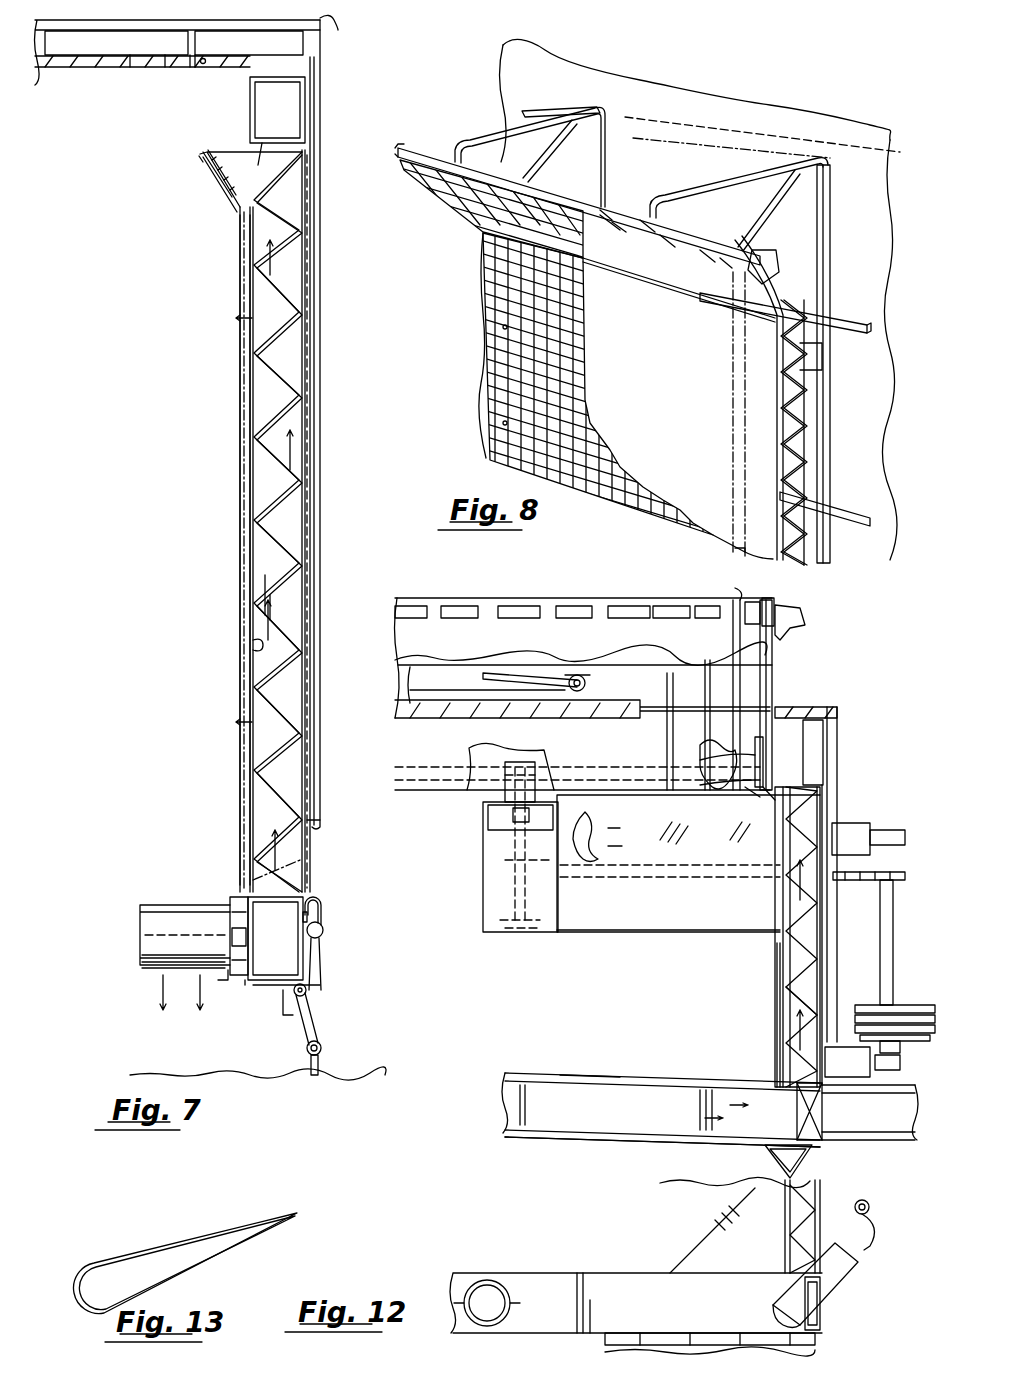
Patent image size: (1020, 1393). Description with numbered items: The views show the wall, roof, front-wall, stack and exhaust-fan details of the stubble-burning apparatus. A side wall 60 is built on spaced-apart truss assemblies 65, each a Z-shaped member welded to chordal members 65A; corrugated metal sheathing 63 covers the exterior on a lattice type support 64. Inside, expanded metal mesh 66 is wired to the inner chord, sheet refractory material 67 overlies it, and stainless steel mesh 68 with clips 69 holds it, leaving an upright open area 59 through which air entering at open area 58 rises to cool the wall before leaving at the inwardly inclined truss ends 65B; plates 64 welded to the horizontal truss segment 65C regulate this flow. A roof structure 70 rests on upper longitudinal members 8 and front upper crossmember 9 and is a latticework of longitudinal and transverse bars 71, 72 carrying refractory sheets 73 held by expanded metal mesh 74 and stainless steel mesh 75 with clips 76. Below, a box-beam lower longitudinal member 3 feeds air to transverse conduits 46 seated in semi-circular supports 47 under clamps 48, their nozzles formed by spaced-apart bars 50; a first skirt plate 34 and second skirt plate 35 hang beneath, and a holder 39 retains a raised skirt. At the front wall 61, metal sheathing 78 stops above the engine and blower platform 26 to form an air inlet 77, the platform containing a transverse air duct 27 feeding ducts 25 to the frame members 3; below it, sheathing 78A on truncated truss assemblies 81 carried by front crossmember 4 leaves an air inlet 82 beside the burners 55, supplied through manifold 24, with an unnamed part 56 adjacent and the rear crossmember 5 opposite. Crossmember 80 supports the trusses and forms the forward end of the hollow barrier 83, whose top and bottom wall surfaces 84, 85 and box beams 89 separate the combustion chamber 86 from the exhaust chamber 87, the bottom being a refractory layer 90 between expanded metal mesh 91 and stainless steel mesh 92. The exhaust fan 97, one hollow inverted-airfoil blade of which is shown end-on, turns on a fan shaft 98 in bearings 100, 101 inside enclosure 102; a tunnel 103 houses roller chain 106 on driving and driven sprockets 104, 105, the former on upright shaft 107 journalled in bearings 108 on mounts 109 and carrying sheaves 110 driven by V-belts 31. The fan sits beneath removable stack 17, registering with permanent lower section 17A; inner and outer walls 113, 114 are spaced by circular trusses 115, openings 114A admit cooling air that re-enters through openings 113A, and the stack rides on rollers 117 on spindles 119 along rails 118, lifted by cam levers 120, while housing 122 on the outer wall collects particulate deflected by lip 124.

In FIG. 7, the roof structure 70 is at (330, 32).
In FIG. 12, the roof structure 70 is at (645, 708).
In FIG. 7, the longitudinal bars 71 is at (60, 46).
In FIG. 7, the transverse bars 72 is at (115, 50).
In FIG. 7, the refractory sheets 73 is at (78, 68).
In FIG. 7, the expanded metal mesh 74 is at (140, 67).
In FIG. 7, the stainless steel mesh 75 is at (170, 67).
In FIG. 7, the clips 76 is at (205, 67).
In FIG. 7, the upper longitudinal members 8 is at (260, 90).
In FIG. 7, the horizontal segment of the trusses 65C is at (276, 138).
In FIG. 8, the horizontal segment of the trusses 65C is at (715, 176).
In FIG. 7, the lattice type support 64 is at (310, 222).
In FIG. 8, the lattice type support 64 is at (855, 500).
In FIG. 7, the clips 69 is at (214, 747).
In FIG. 8, the clips 69 is at (453, 421).
In FIG. 7, the truss assemblies 65 is at (285, 330).
In FIG. 8, the truss assemblies 65 is at (830, 387).
In FIG. 12, the truss assemblies 65 is at (790, 1005).
In FIG. 7, the side wall 60 is at (322, 370).
In FIG. 7, the corrugated metal sheathing 63 is at (305, 428).
In FIG. 8, the corrugated metal sheathing 63 is at (893, 372).
In FIG. 7, the upright open area 59 is at (275, 482).
In FIG. 7, the refractory material 67 is at (240, 540).
In FIG. 8, the refractory material 67 is at (677, 362).
In FIG. 12, the refractory material 67 is at (775, 970).
In FIG. 7, the stainless steel mesh 68 is at (240, 565).
In FIG. 8, the stainless steel mesh 68 is at (593, 328).
In FIG. 7, the expanded metal mesh 66 is at (258, 600).
In FIG. 8, the expanded metal mesh 66 is at (778, 265).
In FIG. 7, the chordal members 65A is at (250, 655).
In FIG. 8, the chordal members 65A is at (703, 561).
In FIG. 8, the inwardly inclined upper ends of trusses 65B is at (695, 252).
In FIG. 7, the open area 58 is at (305, 855).
In FIG. 7, the air conduits 46 is at (165, 905).
In FIG. 12, the air conduits 46 is at (505, 1290).
In FIG. 7, the clamp 48 is at (238, 897).
In FIG. 7, the holder 39 is at (322, 905).
In FIG. 7, the lower longitudinal members 3 is at (268, 916).
In FIG. 7, the spaced-apart bars 50 is at (170, 960).
In FIG. 7, the semi-circular supports 47 is at (235, 985).
In FIG. 7, the first or upper skirt plate 34 is at (312, 1015).
In FIG. 7, the second skirt plate 35 is at (320, 1060).
In FIG. 12, the inwardly projecting lip 124 is at (733, 583).
In FIG. 12, the circular trusses 115 is at (770, 598).
In FIG. 12, the housing 122 is at (800, 612).
In FIG. 12, the outer wall 114 is at (766, 733).
In FIG. 12, the openings 114A is at (660, 618).
In FIG. 12, the rails 118 is at (582, 692).
In FIG. 12, the cam actuating levers 120 is at (478, 675).
In FIG. 12, the spindles 119 is at (590, 675).
In FIG. 12, the rollers 117 is at (585, 685).
In FIG. 12, the stack lower section 17A is at (677, 715).
In FIG. 12, the stack 17 is at (772, 655).
In FIG. 12, the inner wall 113 is at (732, 755).
In FIG. 12, the openings 113A is at (738, 800).
In FIG. 12, the front upper crossmember 9 is at (823, 750).
In FIG. 12, the front wall 61 is at (838, 780).
In FIG. 12, the mounts 109 is at (850, 823).
In FIG. 12, the bearings 108 is at (906, 1078).
In FIG. 12, the bearing 100 is at (512, 830).
In FIG. 12, the driven sprocket 105 is at (528, 822).
In FIG. 12, the roller chain 106 is at (662, 863).
In FIG. 12, the enclosure 102 is at (483, 875).
In FIG. 12, the fan shaft 98 is at (532, 872).
In FIG. 12, the bearing 101 is at (495, 922).
In FIG. 12, the tunnel 103 is at (655, 932).
In FIG. 12, the driving sprocket 104 is at (895, 880).
In FIG. 12, the upright shaft 107 is at (893, 925).
In FIG. 12, the metal sheathing 78 is at (837, 940).
In FIG. 12, the V-belts 31 is at (865, 1005).
In FIG. 12, the sheaves 110 is at (905, 1005).
In FIG. 12, the exhaust chamber 87 is at (570, 995).
In FIG. 12, the inlet 77 is at (830, 1062).
In FIG. 12, the top wall surface 84 is at (585, 1073).
In FIG. 12, the barrier 83 is at (650, 1085).
In FIG. 12, the box beams 89 is at (560, 1114).
In FIG. 12, the crossmember 80 is at (822, 1112).
In FIG. 12, the engine and blower supporting platform 26 is at (890, 1073).
In FIG. 12, the bottom wall surface 85 is at (585, 1147).
In FIG. 12, the expanded metal mesh 91 is at (620, 1147).
In FIG. 12, the refractory layer 90 is at (650, 1147).
In FIG. 12, the stainless steel mesh 92 is at (690, 1148).
In FIG. 12, the air duct 27 is at (890, 1140).
In FIG. 12, the sheathing 78A is at (812, 1160).
In FIG. 12, the combustion chamber 86 is at (610, 1208).
In FIG. 12, the manifold 24 is at (868, 1203).
In FIG. 12, the ducts 25 is at (705, 1238).
In FIG. 12, the truncated truss assemblies 81 is at (790, 1215).
In FIG. 12, the air inlet 82 is at (820, 1240).
In FIG. 12, the burners 55 is at (858, 1250).
In FIG. 12, the rear crossmember 5 is at (615, 1272).
In FIG. 12, the plate 56 is at (835, 1290).
In FIG. 12, the front crossmember 4 is at (822, 1310).
In FIG. 13, the exhaust fan 97 is at (180, 1247).